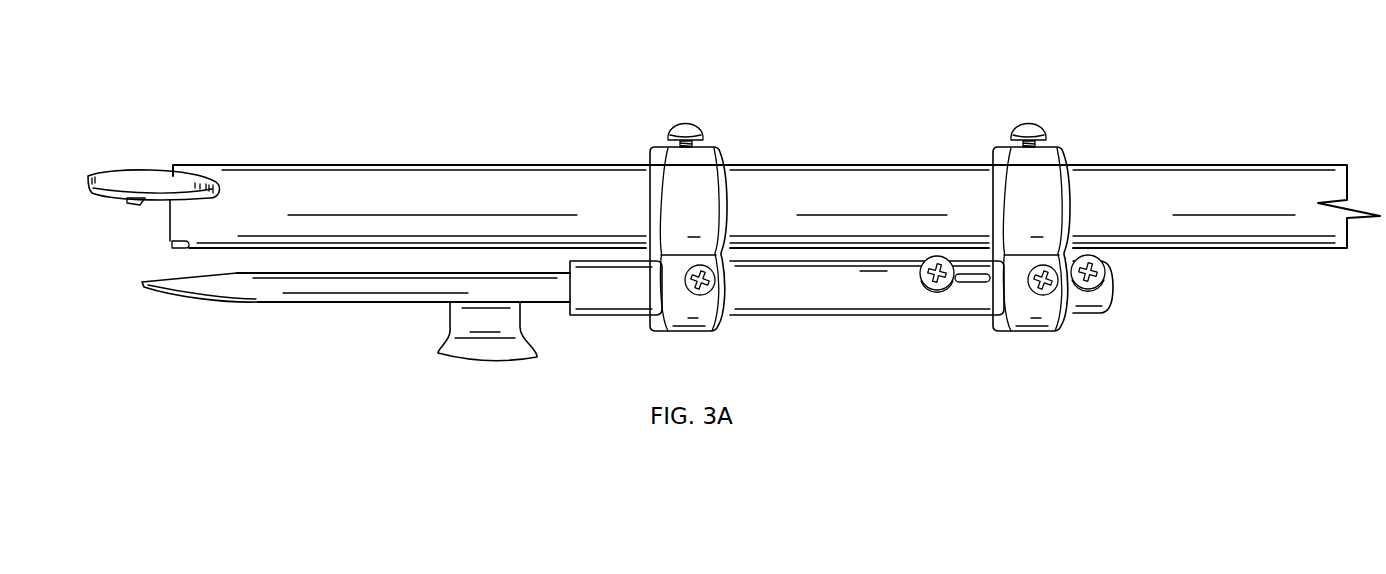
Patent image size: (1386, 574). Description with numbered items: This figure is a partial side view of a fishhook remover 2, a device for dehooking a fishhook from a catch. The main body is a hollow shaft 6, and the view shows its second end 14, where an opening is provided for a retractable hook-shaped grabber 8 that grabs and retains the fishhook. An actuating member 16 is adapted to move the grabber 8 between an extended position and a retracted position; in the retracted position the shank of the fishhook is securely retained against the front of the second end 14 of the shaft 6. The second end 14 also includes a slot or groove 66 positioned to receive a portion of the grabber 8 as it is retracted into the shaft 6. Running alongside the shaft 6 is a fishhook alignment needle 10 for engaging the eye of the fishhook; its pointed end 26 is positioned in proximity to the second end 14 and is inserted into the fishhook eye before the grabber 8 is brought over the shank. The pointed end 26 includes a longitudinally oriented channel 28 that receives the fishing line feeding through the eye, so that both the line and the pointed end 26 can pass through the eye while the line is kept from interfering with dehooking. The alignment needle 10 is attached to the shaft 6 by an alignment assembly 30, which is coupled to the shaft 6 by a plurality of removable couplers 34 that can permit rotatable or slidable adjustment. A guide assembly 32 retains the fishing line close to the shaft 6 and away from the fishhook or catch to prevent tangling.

The fishhook remover 2 is at (961, 152).
The shaft 6 is at (1195, 205).
The hook-shaped grabber 8 is at (106, 177).
The fishhook alignment needle 10 is at (334, 323).
The second end 14 is at (180, 215).
The actuating member 16 is at (173, 245).
The pointed end 26 is at (143, 287).
The longitudinally oriented channel 28 is at (215, 306).
The alignment assembly 30 is at (810, 288).
The guide assembly 32 is at (495, 348).
The removable coupler 34 is at (695, 177).
The slot or groove 66 is at (213, 188).